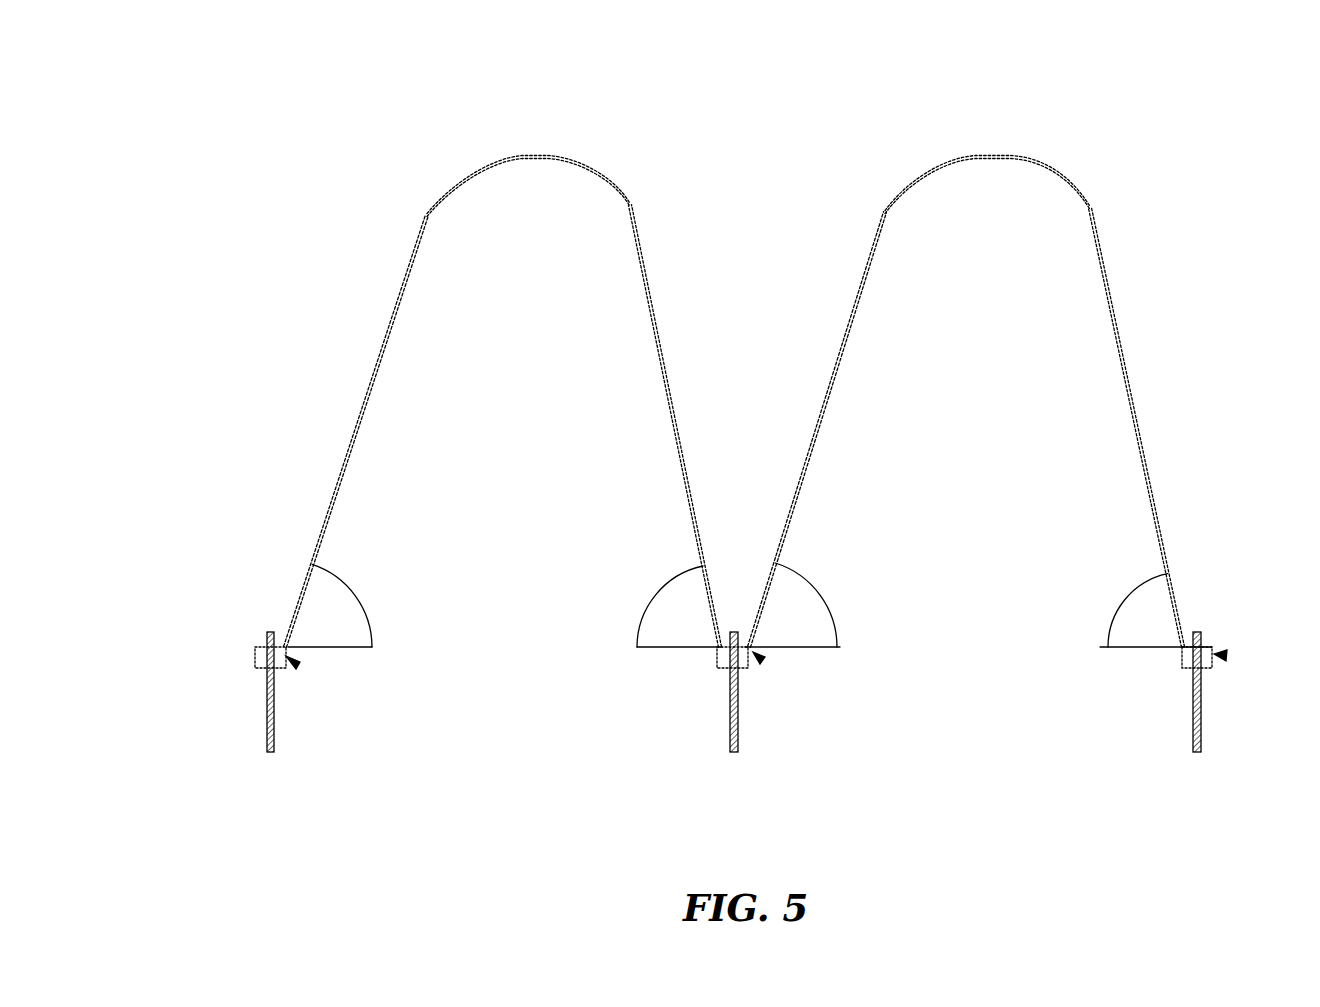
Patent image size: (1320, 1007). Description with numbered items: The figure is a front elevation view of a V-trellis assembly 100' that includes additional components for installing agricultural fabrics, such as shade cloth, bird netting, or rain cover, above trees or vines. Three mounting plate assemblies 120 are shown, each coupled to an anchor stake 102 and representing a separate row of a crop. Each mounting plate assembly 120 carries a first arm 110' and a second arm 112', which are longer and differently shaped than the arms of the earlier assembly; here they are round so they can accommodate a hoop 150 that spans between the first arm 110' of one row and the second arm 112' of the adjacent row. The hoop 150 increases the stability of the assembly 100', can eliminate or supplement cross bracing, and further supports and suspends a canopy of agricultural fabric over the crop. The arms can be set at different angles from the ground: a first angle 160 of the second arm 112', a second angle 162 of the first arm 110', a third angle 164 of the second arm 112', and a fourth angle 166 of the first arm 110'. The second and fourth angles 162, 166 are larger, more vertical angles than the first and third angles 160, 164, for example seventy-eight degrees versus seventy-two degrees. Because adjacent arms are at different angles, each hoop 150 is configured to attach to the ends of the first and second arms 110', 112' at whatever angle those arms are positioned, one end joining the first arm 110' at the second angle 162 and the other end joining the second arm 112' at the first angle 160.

The V-trellis assembly 100' is at (1255, 90).
The hoop 150 is at (495, 160).
The second arm 112' is at (579, 430).
The first arm 110' is at (869, 426).
The anchor stake 102 is at (268, 712).
The mounting plate assembly 120 is at (300, 661).
The first angle 160 is at (344, 584).
The second angle 162 is at (678, 584).
The third angle 164 is at (805, 582).
The fourth angle 166 is at (1142, 584).